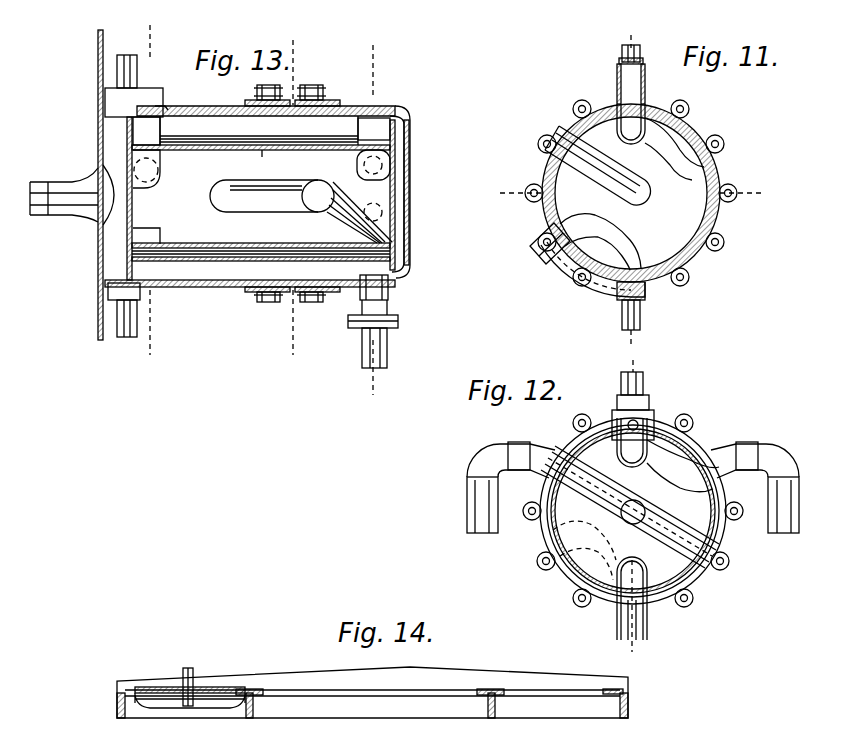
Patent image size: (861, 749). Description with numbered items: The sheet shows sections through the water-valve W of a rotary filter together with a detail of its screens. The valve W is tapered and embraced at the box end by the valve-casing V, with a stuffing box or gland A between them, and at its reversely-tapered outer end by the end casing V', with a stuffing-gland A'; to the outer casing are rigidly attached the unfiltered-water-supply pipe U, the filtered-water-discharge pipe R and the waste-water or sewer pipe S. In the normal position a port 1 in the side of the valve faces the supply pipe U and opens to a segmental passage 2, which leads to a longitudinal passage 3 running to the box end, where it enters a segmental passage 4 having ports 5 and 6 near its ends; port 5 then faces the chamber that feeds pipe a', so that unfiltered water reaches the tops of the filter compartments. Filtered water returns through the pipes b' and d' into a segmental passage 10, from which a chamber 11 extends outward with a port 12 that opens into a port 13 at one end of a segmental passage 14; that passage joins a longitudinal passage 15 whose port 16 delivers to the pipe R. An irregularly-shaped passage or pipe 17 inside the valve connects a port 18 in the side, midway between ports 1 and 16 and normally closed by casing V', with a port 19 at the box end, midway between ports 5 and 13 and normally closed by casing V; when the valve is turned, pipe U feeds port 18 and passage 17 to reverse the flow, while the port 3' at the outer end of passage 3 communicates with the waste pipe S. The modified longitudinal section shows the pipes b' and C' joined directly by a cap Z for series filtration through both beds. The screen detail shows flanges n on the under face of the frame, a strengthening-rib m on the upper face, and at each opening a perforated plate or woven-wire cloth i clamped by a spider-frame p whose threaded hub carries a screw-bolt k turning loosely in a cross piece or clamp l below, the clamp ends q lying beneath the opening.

In FIG. 12, the port 1 is at (712, 480).
In FIG. 12, the segmental passage 2 is at (683, 457).
In FIG. 13, the longitudinal passage 3 is at (261, 133).
In FIG. 12, the longitudinal passage 3 is at (632, 442).
In FIG. 12, the port 3' is at (642, 422).
In FIG. 13, the segmental passage 4 is at (160, 172).
In FIG. 11, the segmental passage 4 is at (674, 149).
In FIG. 13, the port 5 is at (146, 131).
In FIG. 11, the port 5 is at (631, 124).
In FIG. 13, the port 6 is at (146, 182).
In FIG. 11, the port 6 is at (722, 158).
In FIG. 13, the segmental passage 10 is at (291, 197).
In FIG. 11, the segmental passage 10 is at (570, 276).
In FIG. 13, the chamber 11 is at (155, 194).
In FIG. 11, the chamber 11 is at (560, 257).
In FIG. 12, the chamber 11 is at (550, 570).
In FIG. 13, the port 12 is at (371, 223).
In FIG. 11, the port 12 is at (548, 238).
In FIG. 11, the port 13 is at (578, 228).
In FIG. 13, the segmental passage 14 is at (162, 238).
In FIG. 11, the segmental passage 14 is at (597, 253).
In FIG. 12, the segmental passage 14 is at (584, 550).
In FIG. 13, the longitudinal passage 15 is at (266, 259).
In FIG. 12, the longitudinal passage 15 is at (645, 565).
In FIG. 13, the port 16 is at (390, 289).
In FIG. 12, the port 16 is at (617, 618).
In FIG. 13, the passage or pipe 17 is at (282, 213).
In FIG. 11, the passage or pipe 17 is at (628, 178).
In FIG. 12, the passage or pipe 17 is at (648, 515).
In FIG. 13, the port 18 is at (380, 219).
In FIG. 12, the port 18 is at (714, 554).
In FIG. 11, the port 19 is at (556, 140).
In FIG. 13, the pipe a' is at (126, 60).
In FIG. 11, the pipe a' is at (639, 74).
In FIG. 12, the pipe a' is at (648, 391).
In FIG. 13, the pipe b' is at (64, 189).
In FIG. 13, the pipe C' is at (64, 223).
In FIG. 13, the pipe d' is at (121, 330).
In FIG. 11, the pipe d' is at (641, 306).
In FIG. 13, the valve-casing V is at (266, 100).
In FIG. 11, the valve-casing V is at (631, 193).
In FIG. 13, the end casing V' is at (408, 185).
In FIG. 11, the end casing V' is at (734, 212).
In FIG. 13, the water-valve W is at (260, 161).
In FIG. 11, the water-valve W is at (708, 202).
In FIG. 12, the water-valve W is at (724, 512).
In FIG. 13, the unfiltered-water-supply pipe U is at (392, 166).
In FIG. 12, the unfiltered-water-supply pipe U is at (778, 448).
In FIG. 13, the cap Z is at (116, 178).
In FIG. 13, the stuffing box or gland A is at (268, 182).
In FIG. 13, the stuffing-gland A' is at (311, 182).
In FIG. 13, the filtered-water-discharge pipe R is at (390, 303).
In FIG. 12, the waste-water or sewer pipe S is at (490, 448).
In FIG. 14, the spider-frame p is at (175, 688).
In FIG. 14, the screw-bolt k is at (189, 668).
In FIG. 14, the perforated plate or woven-wire cloth i is at (214, 690).
In FIG. 14, the strengthening-rib m is at (410, 668).
In FIG. 14, the flanges n is at (408, 719).
In FIG. 14, the end q is at (140, 703).
In FIG. 14, the cross piece or clamp l is at (182, 708).